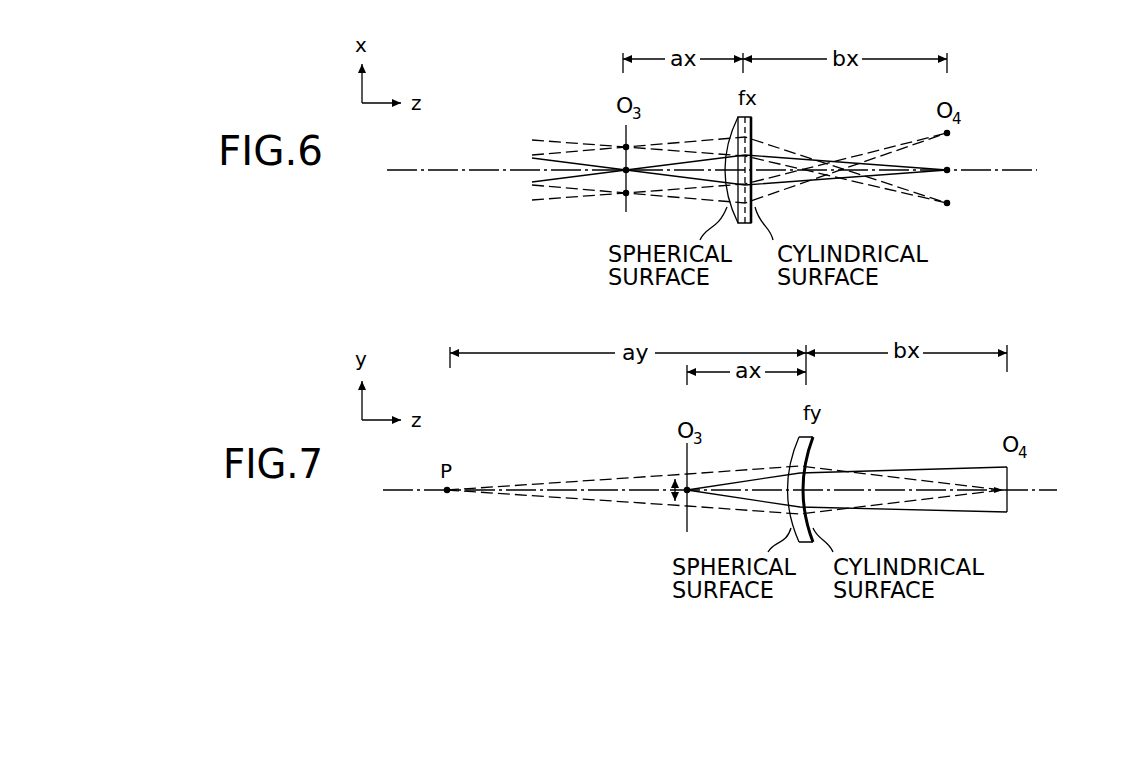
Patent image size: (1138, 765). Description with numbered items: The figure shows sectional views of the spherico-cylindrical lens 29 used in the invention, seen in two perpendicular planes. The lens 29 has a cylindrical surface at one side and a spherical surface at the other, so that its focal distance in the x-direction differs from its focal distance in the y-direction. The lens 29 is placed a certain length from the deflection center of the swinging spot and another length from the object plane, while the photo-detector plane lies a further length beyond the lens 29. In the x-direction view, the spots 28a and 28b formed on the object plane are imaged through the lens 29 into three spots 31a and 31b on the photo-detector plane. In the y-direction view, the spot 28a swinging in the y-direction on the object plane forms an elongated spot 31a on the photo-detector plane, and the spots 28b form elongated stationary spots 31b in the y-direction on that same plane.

In FIG. 6, the spot 28a is at (626, 170).
In FIG. 7, the spot 28a is at (687, 490).
In FIG. 6, the spots 28b is at (626, 147).
In FIG. 6, the lens 29 is at (752, 118).
In FIG. 7, the lens 29 is at (812, 437).
In FIG. 6, the elongated spot 31a is at (947, 170).
In FIG. 7, the elongated spot 31a is at (1009, 467).
In FIG. 6, the elongated stationary spots 31b is at (947, 133).